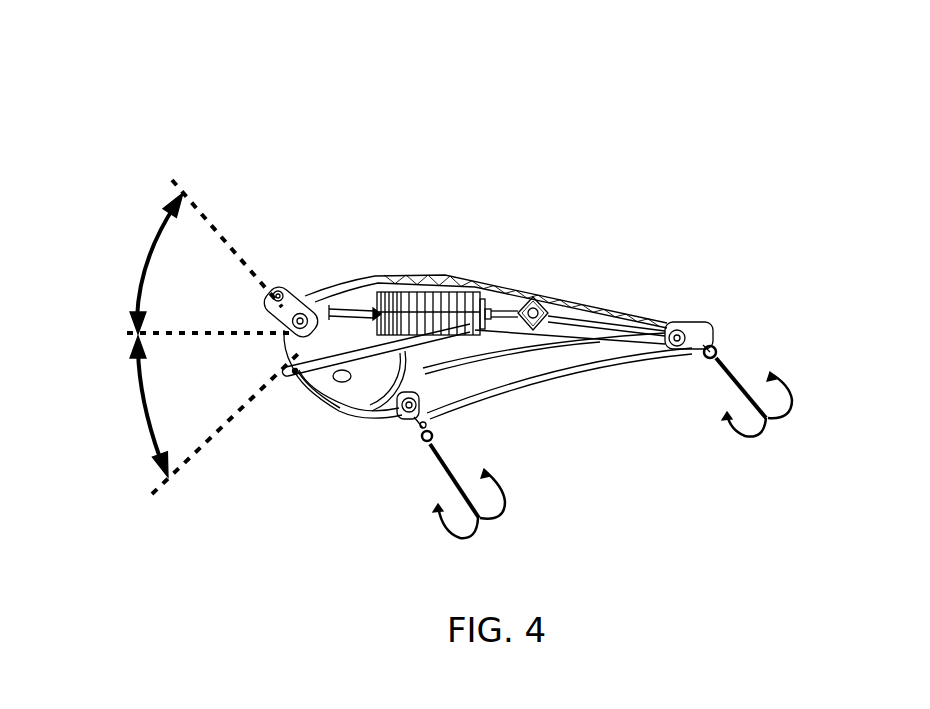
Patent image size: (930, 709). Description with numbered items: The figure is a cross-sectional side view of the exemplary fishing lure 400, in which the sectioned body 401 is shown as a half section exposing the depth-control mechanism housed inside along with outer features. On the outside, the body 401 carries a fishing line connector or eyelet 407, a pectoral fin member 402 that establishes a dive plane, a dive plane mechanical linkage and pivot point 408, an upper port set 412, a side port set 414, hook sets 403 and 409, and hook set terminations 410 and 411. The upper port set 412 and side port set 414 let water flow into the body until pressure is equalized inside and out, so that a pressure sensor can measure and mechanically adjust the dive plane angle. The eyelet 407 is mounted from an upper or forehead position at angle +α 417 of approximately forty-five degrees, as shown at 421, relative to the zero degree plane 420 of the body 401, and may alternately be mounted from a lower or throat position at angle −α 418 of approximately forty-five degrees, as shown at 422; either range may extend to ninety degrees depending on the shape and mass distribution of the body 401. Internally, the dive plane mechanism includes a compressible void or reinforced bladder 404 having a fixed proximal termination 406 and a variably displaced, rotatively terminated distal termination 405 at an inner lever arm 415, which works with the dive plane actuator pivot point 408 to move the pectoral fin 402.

The lure 400 is at (323, 122).
The body 401 is at (490, 281).
The pectoral fin member 402 is at (300, 380).
The hook set 403 is at (741, 373).
The reinforced bladder 404 is at (443, 281).
The distal termination 405 is at (334, 300).
The proximal termination 406 is at (553, 295).
The fishing line connector or eyelet 407 is at (283, 289).
The dive plane actuator pivot point 408 is at (340, 381).
The hook set 409 is at (513, 513).
The hook set termination 410 is at (697, 323).
The hook set termination 411 is at (417, 430).
The upper port set 412 is at (392, 294).
The side port set 414 is at (420, 366).
The inner lever arm 415 is at (342, 336).
The angle +α 417 is at (90, 250).
The angle −α 418 is at (88, 410).
The zero degree plane 420 is at (197, 331).
The upper eyelet mounting position 421 is at (184, 192).
The lower eyelet mounting position 422 is at (170, 480).